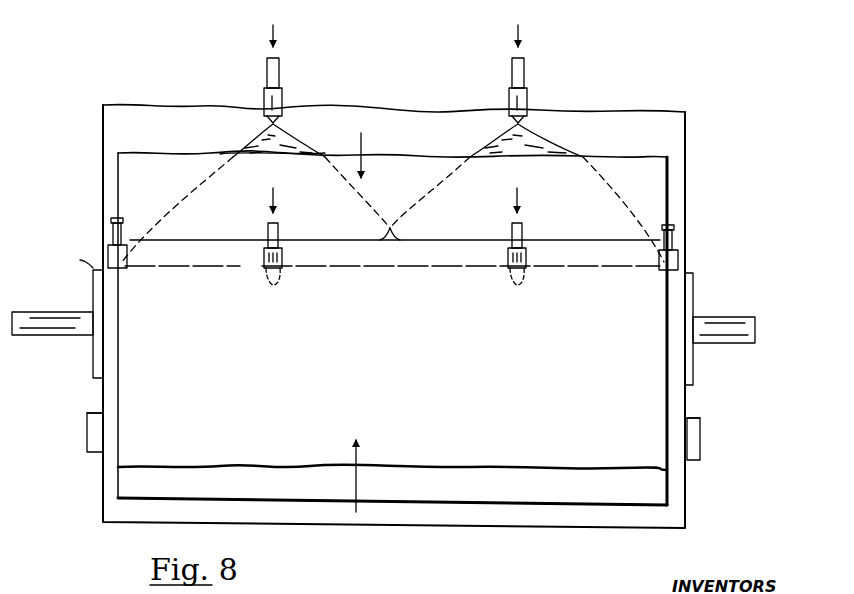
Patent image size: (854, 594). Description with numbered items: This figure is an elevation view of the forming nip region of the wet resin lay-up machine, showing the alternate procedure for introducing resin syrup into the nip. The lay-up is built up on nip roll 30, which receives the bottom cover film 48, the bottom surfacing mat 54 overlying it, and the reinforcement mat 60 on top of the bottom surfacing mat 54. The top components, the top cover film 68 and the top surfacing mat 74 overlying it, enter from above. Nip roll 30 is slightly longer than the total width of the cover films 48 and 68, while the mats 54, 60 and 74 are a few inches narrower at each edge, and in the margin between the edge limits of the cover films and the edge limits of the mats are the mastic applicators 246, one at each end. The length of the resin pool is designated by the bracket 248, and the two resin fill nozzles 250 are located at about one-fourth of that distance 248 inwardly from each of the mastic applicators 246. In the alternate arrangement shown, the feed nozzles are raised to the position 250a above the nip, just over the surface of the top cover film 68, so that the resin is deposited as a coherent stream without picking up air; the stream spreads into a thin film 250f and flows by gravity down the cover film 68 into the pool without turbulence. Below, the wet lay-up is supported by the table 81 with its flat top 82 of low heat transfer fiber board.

The nip roll 30 is at (93, 272).
The bottom cover film 48 is at (446, 523).
The bottom surfacing mat 54 is at (386, 499).
The reinforcement mat 60 is at (312, 470).
The top cover film 68 is at (167, 105).
The top surfacing mat 74 is at (230, 152).
The table 81 is at (84, 437).
The flat top 82 is at (88, 413).
The mastic applicators 246 is at (107, 247).
The length of the resin pool 248 is at (392, 226).
The resin fill nozzles 250 is at (284, 256).
The alternate position of feed nozzles 250a is at (283, 95).
The thin film of resin 250f is at (289, 135).